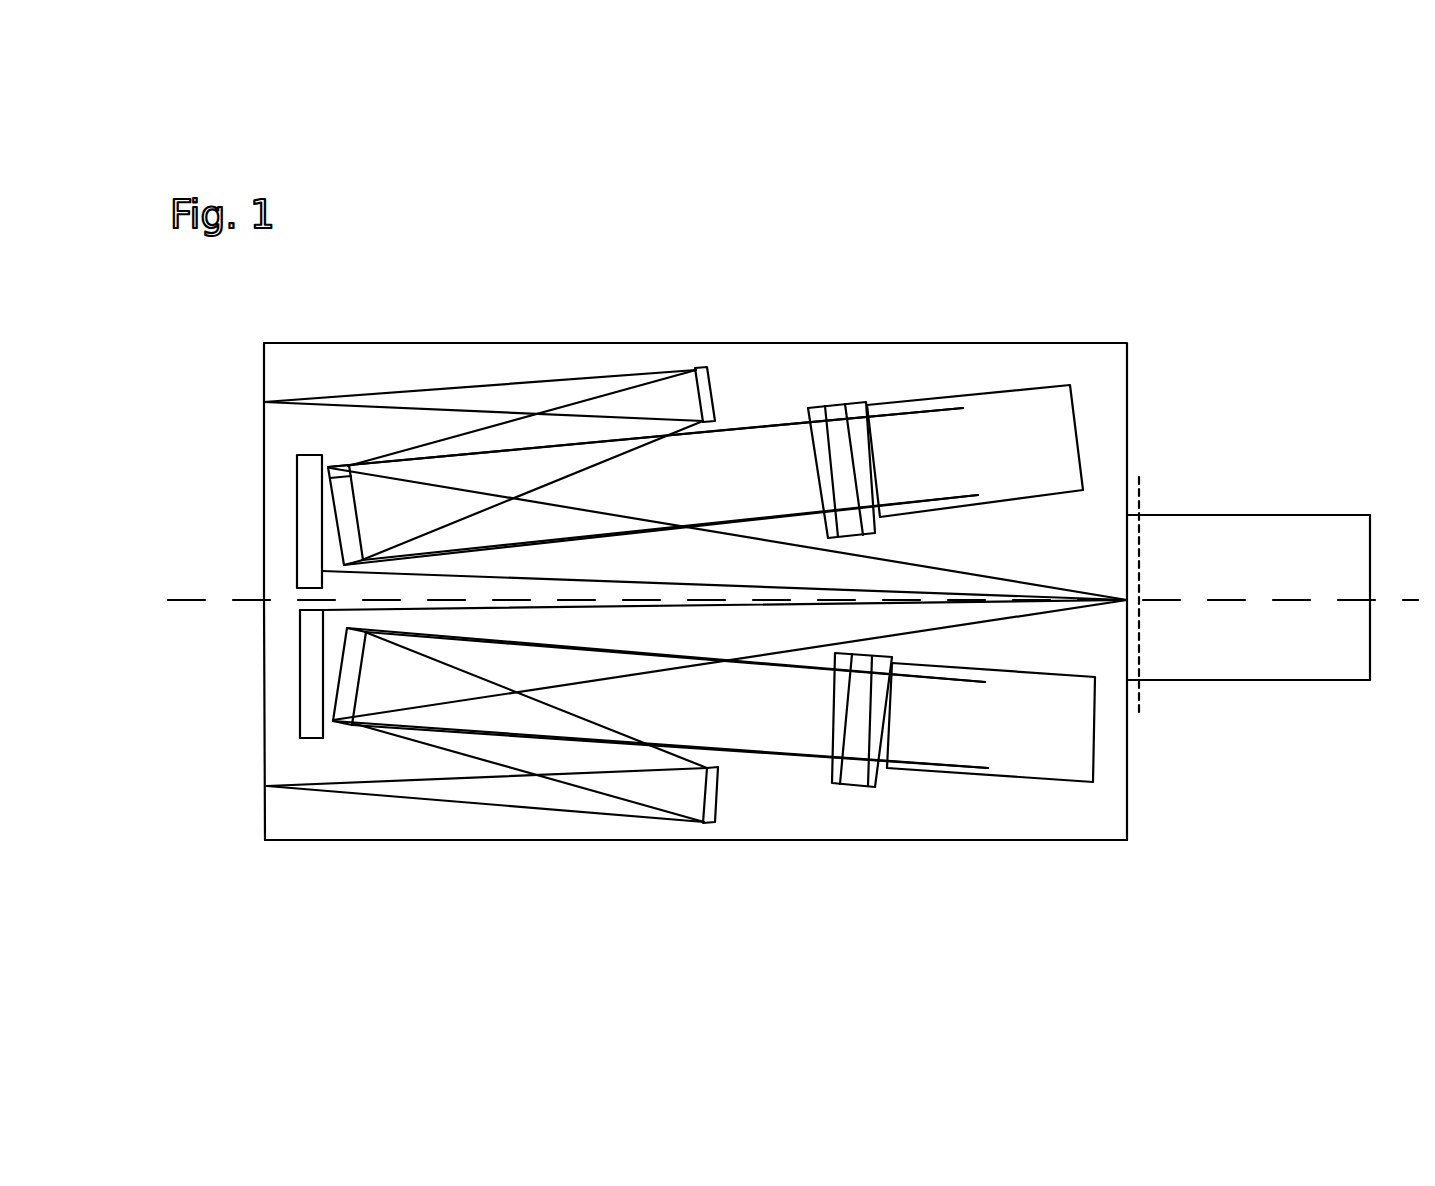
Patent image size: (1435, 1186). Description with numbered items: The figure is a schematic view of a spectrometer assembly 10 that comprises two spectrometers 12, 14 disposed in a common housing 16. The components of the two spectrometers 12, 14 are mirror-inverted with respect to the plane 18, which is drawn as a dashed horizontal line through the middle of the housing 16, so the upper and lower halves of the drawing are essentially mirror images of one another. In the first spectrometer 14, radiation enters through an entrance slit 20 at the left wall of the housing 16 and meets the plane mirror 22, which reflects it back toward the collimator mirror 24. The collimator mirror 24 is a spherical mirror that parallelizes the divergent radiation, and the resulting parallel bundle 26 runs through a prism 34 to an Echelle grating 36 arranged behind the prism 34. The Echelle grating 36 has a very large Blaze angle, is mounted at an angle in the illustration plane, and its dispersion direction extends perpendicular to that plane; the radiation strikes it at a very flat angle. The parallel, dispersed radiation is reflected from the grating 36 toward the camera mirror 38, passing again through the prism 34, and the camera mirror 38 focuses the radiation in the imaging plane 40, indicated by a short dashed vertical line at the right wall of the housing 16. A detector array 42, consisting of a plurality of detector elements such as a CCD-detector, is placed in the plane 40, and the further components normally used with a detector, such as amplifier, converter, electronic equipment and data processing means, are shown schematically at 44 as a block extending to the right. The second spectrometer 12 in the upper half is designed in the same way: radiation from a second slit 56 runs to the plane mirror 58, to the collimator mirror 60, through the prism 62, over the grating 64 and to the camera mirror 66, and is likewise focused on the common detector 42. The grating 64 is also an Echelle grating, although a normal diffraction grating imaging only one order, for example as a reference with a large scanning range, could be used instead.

The spectrometer assembly 10 is at (656, 568).
The spectrometer 12 is at (298, 428).
The spectrometer 14 is at (310, 750).
The common housing 16 is at (517, 840).
The plane 18 is at (183, 602).
The entrance slit 20 is at (268, 788).
The plane mirror 22 is at (707, 822).
The collimator mirror 24 is at (347, 632).
The parallel bundle 26 is at (760, 775).
The prism 34 is at (826, 777).
The Echelle grating 36 is at (1072, 717).
The camera mirror 38 is at (315, 690).
The imaging plane 40 is at (1140, 503).
The detector array 42 is at (1142, 597).
The further components 44 is at (1327, 527).
The second slit 56 is at (264, 402).
The plane mirror 58 is at (715, 380).
The collimator mirror 60 is at (342, 495).
The prism 62 is at (887, 393).
The grating 64 is at (1048, 412).
The camera mirror 66 is at (307, 530).